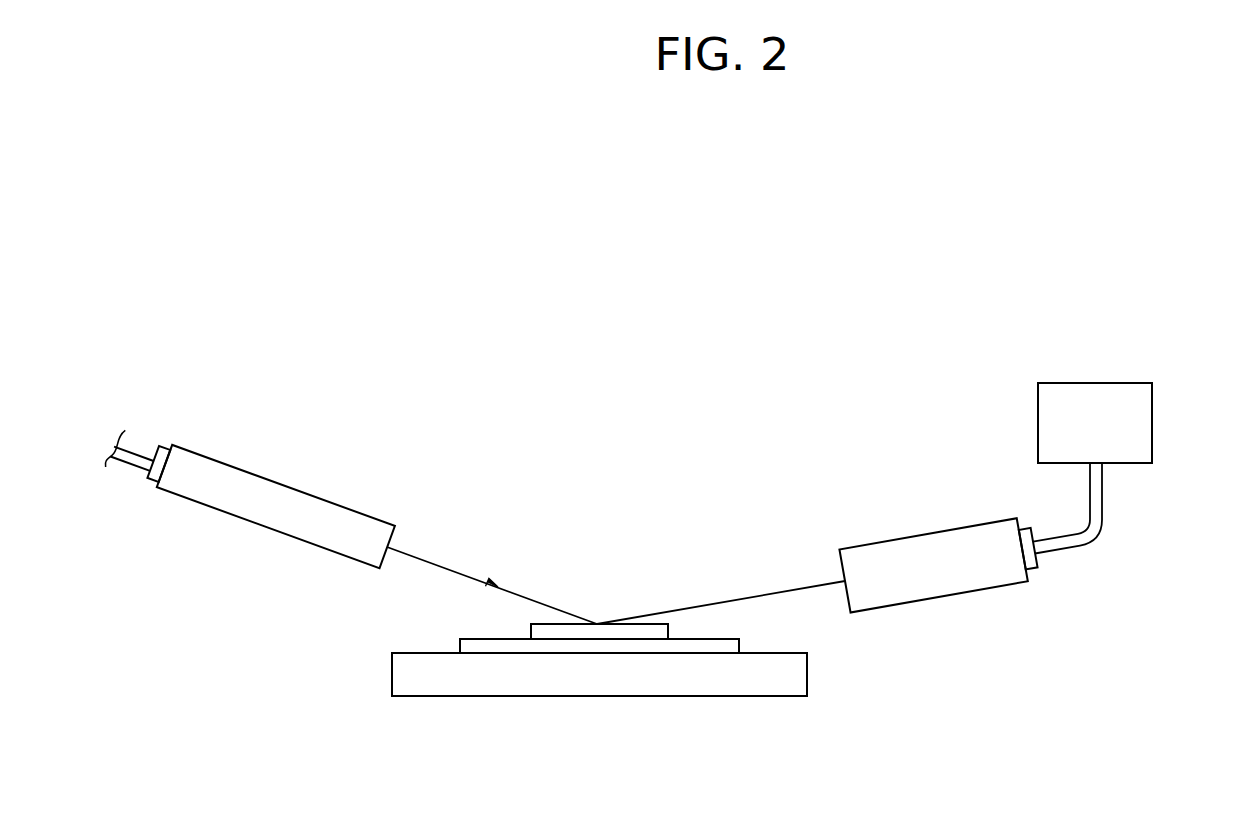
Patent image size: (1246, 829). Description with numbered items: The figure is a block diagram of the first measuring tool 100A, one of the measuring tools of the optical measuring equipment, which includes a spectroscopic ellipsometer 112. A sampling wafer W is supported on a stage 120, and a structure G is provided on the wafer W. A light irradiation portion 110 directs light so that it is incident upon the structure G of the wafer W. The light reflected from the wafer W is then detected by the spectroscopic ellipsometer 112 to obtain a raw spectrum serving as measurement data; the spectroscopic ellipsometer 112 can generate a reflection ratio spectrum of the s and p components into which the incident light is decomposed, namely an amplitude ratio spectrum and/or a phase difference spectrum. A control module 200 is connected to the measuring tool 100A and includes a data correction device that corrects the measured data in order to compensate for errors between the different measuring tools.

The first measuring tool 100A is at (612, 376).
The light irradiation portion 110 is at (252, 521).
The spectroscopic ellipsometer 112 is at (953, 593).
The stage 120 is at (433, 682).
The control module 200 is at (1152, 422).
The structure G is at (598, 635).
The sampling wafer W is at (713, 647).